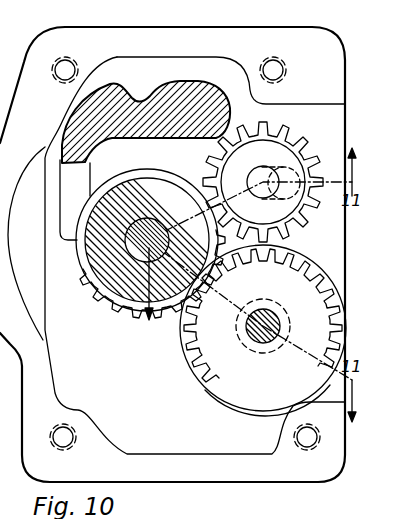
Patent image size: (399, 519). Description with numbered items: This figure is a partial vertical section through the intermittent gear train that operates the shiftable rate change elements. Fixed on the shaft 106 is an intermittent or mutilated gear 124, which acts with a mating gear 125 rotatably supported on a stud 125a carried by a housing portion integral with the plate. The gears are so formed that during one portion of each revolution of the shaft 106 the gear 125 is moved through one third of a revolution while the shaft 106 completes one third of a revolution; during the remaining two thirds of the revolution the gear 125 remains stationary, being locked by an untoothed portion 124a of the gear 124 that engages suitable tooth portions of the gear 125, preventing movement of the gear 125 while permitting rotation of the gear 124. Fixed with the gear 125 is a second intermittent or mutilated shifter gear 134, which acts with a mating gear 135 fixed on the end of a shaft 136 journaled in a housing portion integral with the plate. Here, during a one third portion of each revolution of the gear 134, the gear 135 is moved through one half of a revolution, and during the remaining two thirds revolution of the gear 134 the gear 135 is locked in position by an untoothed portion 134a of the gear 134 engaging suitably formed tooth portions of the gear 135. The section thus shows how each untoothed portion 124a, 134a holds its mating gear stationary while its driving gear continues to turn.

The shaft 106 is at (86, 283).
The intermittent or mutilated gear 124 is at (125, 305).
The untoothed portion of the gear 124a is at (80, 252).
The mating gear 125 is at (241, 348).
The stud 125a is at (260, 340).
The intermittent or mutilated shifter gear 134 is at (183, 338).
The untoothed portion of the shifter gear 134a is at (260, 410).
The mating gear 135 is at (294, 141).
The shaft 136 is at (263, 178).